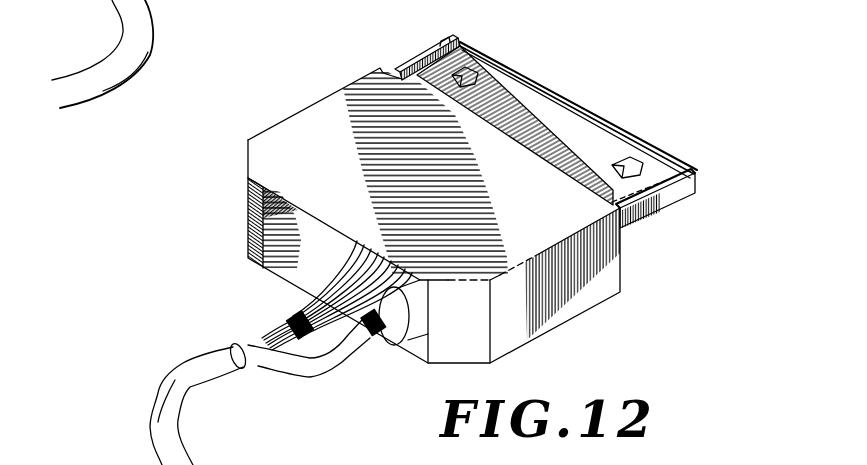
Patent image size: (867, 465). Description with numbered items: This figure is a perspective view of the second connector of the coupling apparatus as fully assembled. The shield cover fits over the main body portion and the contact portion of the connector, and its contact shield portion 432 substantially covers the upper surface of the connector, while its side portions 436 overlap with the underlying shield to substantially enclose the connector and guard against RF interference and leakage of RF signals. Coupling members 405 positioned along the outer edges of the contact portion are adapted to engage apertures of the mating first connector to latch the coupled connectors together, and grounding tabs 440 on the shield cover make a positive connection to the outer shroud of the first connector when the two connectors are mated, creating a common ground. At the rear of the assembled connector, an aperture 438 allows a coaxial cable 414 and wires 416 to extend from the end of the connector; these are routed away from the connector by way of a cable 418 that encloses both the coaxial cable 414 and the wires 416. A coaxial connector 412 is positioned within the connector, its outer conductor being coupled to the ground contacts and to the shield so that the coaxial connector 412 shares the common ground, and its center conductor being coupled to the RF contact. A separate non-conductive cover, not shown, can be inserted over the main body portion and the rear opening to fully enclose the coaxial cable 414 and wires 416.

The coupling members 405 is at (443, 50).
The grounding tabs 440 is at (480, 68).
The contact shield portion 432 is at (567, 122).
The side portions 436 is at (590, 292).
The aperture 438 is at (300, 244).
The wires 416 is at (345, 283).
The cable 418 is at (215, 365).
The coaxial cable 414 is at (310, 368).
The coaxial connector 412 is at (393, 318).